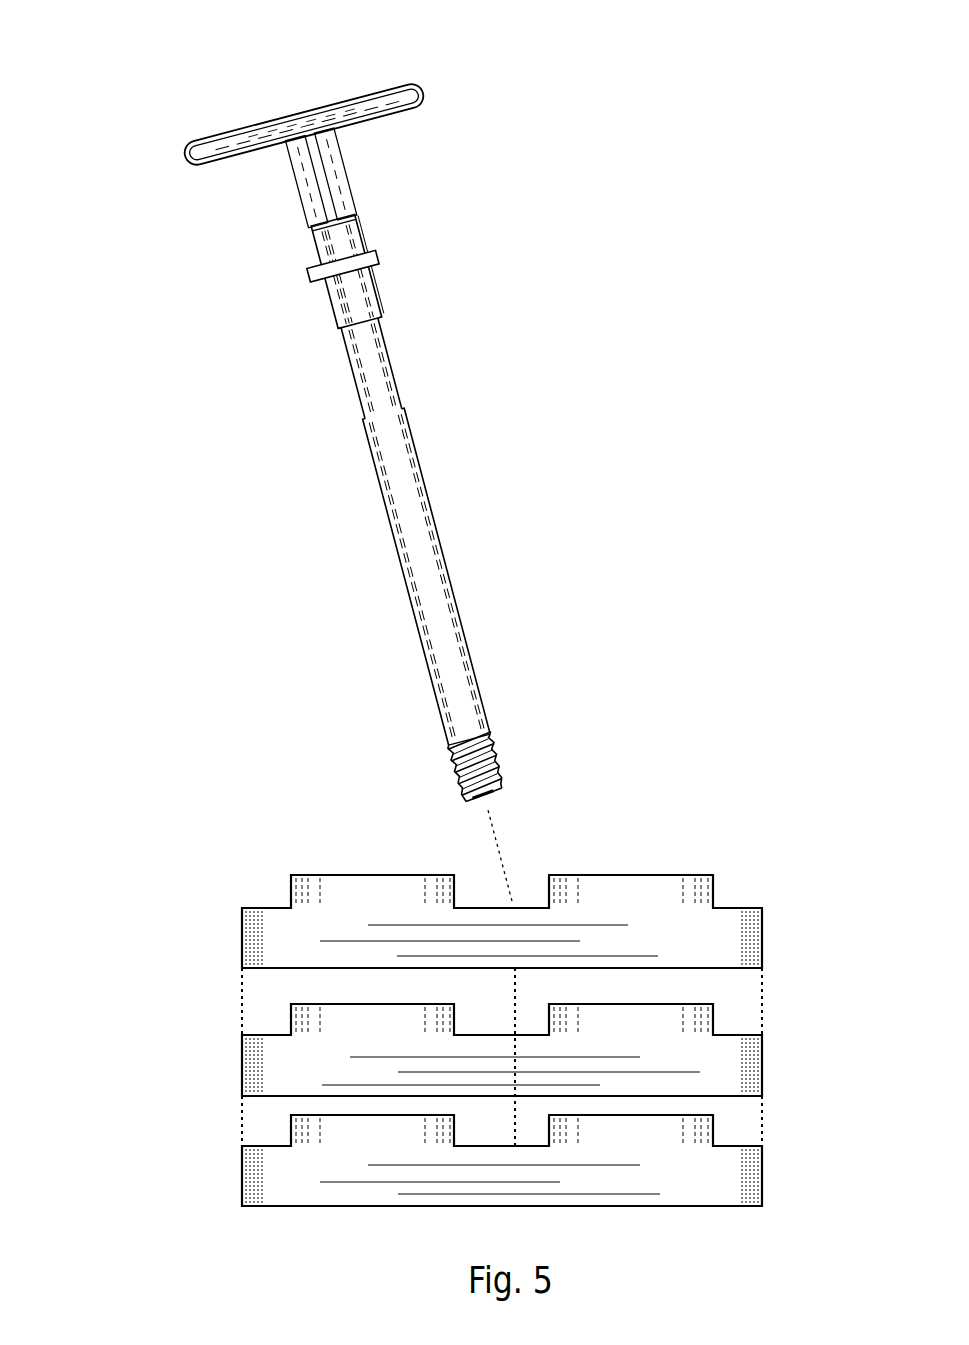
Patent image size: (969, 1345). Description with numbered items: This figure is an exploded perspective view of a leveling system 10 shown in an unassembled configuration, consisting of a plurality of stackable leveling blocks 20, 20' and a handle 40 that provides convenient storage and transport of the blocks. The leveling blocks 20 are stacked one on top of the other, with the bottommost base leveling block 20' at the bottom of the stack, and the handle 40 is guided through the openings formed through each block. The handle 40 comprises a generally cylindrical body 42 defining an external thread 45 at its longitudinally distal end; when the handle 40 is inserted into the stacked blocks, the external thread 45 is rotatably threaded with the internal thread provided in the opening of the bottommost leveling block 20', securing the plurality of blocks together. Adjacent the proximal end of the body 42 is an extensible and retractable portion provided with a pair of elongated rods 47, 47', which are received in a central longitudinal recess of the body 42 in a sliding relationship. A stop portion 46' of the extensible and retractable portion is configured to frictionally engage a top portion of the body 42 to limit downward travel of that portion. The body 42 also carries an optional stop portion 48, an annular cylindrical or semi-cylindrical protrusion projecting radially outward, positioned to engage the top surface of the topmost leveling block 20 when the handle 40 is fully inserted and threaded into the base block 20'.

The leveling system 10 is at (71, 62).
The leveling block 20 is at (539, 1010).
The bottommost base leveling block 20' is at (476, 1163).
The handle 40 is at (382, 495).
The cylindrical body 42 is at (427, 567).
The external thread 45 is at (497, 752).
The stop portion 46' is at (364, 124).
The elongated rod 47 is at (283, 182).
The elongated rod 47' is at (380, 174).
The stop portion 48 is at (313, 276).